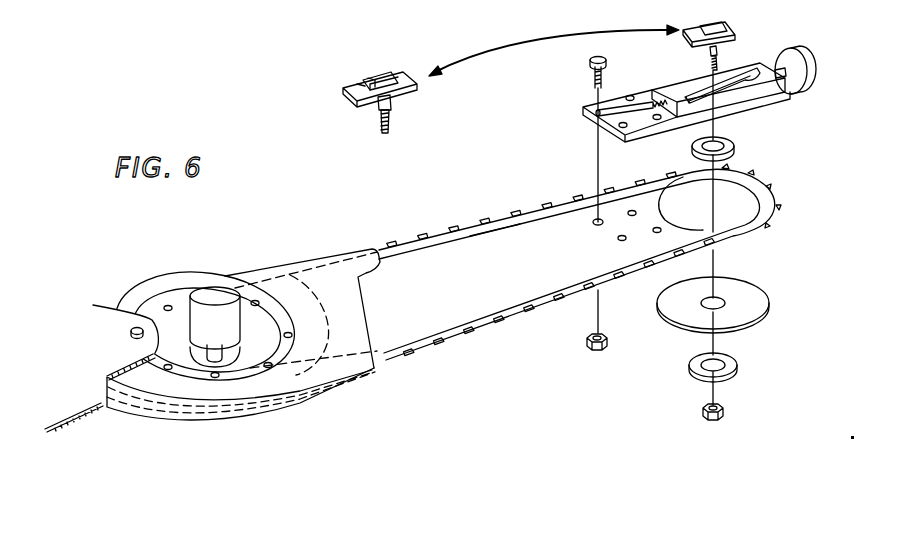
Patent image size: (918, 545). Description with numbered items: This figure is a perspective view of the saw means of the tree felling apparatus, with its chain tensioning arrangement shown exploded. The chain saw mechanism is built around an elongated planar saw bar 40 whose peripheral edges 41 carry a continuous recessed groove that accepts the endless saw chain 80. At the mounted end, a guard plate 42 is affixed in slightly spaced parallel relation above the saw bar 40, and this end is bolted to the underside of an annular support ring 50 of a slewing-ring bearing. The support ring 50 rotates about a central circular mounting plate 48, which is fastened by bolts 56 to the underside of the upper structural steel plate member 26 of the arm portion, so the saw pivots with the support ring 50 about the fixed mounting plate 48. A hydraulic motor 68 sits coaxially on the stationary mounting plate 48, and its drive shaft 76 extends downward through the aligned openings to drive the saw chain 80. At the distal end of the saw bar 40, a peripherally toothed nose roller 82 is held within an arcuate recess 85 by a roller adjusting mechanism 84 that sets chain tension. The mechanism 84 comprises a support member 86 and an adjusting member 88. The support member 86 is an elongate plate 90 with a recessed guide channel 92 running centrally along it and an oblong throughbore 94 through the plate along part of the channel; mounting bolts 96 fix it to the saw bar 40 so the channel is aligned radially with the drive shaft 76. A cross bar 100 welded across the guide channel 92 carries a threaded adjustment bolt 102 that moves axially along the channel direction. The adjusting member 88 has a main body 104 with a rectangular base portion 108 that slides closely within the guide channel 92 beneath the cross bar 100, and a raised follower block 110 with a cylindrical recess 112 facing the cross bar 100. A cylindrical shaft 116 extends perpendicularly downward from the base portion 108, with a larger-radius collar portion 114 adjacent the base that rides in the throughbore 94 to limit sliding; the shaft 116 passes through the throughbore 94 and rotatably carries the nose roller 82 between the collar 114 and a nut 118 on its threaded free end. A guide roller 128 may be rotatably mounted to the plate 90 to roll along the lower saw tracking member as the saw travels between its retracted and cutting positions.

The upper structural steel plate member 26 is at (80, 432).
The saw bar 40 is at (433, 300).
The peripheral edges 41 is at (473, 318).
The guard plate 42 is at (328, 416).
The mounting plate 48 is at (155, 310).
The support ring 50 is at (247, 398).
The bolts 56 is at (130, 334).
The hydraulic motor 68 is at (215, 293).
The drive shaft 76 is at (210, 354).
The saw chain 80 is at (537, 316).
The nose roller 82 is at (771, 305).
The roller adjusting mechanism 84 is at (650, 350).
The arcuate recess 85 is at (703, 229).
The support member 86 is at (750, 120).
The adjusting member 88 is at (310, 86).
The plate 90 is at (765, 101).
The guide channel 92 is at (742, 80).
The throughbore 94 is at (687, 96).
The mounting bolts 96 is at (590, 63).
The cross bar 100 is at (666, 113).
The adjustment bolt 102 is at (594, 125).
The main body 104 is at (407, 77).
The base portion 108 is at (356, 84).
The follower block 110 is at (388, 68).
The cylindrical recess 112 is at (371, 78).
The collar portion 114 is at (380, 105).
The cylindrical shaft 116 is at (391, 121).
The nut 118 is at (726, 413).
The guide roller 128 is at (801, 87).